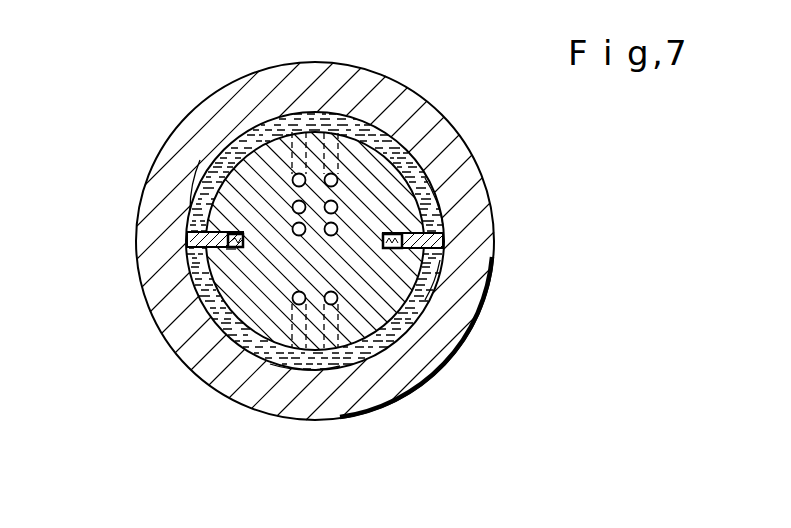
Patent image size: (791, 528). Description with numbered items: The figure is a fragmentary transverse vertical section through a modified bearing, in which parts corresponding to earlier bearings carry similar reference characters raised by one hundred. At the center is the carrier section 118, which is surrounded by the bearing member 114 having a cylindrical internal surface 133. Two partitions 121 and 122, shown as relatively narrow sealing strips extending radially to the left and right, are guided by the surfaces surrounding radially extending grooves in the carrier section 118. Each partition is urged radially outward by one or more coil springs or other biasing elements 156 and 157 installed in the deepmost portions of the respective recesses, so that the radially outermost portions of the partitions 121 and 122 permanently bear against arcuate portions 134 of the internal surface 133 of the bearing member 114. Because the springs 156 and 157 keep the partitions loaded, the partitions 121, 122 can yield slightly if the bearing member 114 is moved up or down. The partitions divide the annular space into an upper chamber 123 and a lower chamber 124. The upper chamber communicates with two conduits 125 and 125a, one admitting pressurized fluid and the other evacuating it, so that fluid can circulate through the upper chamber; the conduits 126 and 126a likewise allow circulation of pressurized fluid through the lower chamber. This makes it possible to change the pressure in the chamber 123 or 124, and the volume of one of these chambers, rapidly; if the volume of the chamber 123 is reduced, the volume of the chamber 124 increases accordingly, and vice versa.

The bearing member 114 is at (448, 168).
The carrier section 118 is at (430, 180).
The partition 121 is at (187, 243).
The partition 122 is at (443, 243).
The chamber 123 is at (343, 128).
The chamber 124 is at (302, 362).
The conduit 125 is at (292, 174).
The conduit 125a is at (387, 173).
The conduit 126 is at (293, 304).
The conduit 126a is at (330, 315).
The cylindrical internal surface 133 is at (202, 188).
The arcuate portion 134 is at (430, 277).
The biasing element 156 is at (230, 246).
The biasing element 157 is at (440, 220).